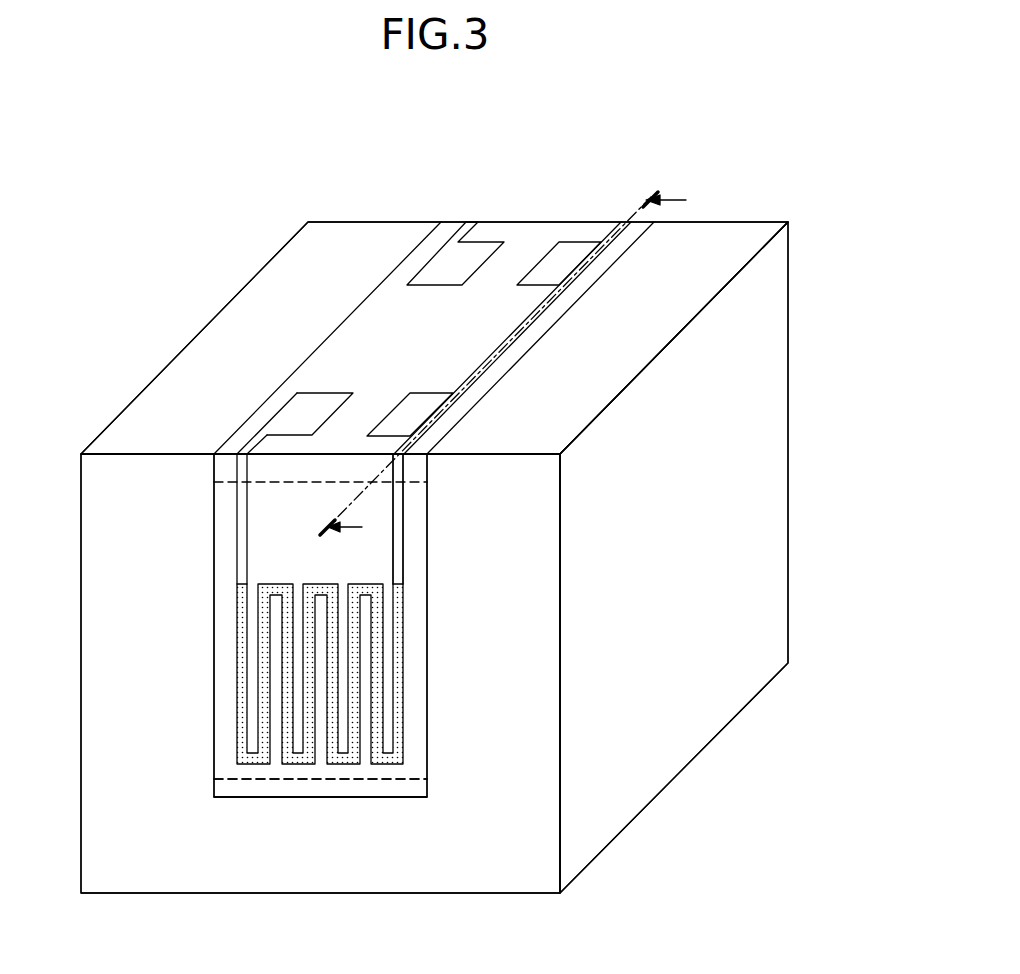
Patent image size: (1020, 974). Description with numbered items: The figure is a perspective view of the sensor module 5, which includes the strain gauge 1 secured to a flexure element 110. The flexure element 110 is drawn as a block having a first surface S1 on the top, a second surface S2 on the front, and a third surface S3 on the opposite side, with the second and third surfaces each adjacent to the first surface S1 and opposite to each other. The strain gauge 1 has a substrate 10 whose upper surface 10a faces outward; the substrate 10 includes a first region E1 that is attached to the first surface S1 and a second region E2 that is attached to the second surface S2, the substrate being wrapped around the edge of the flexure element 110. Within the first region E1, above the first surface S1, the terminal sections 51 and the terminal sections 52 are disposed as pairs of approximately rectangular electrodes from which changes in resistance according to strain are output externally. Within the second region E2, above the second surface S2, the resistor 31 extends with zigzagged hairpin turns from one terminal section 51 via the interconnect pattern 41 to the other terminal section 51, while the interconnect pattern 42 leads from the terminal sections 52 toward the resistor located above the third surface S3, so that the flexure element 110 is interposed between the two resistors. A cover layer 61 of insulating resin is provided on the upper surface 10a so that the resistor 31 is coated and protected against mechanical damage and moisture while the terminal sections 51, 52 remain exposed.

The sensor module 5 is at (96, 148).
The flexure element 110 is at (767, 327).
The first surface S1 is at (745, 245).
The second surface S2 is at (103, 477).
The third surface S3 is at (343, 222).
The first region E1 is at (402, 222).
The second region E2 is at (187, 455).
The strain gauge 1 is at (218, 812).
The substrate 10 is at (276, 812).
The upper surface 10a is at (232, 790).
The cover layer 61 is at (320, 783).
The resistor 31 is at (388, 764).
The interconnect pattern 41 is at (398, 533).
The interconnect pattern 42 is at (463, 232).
The terminal sections 51 is at (303, 416).
The terminal sections 52 is at (567, 262).